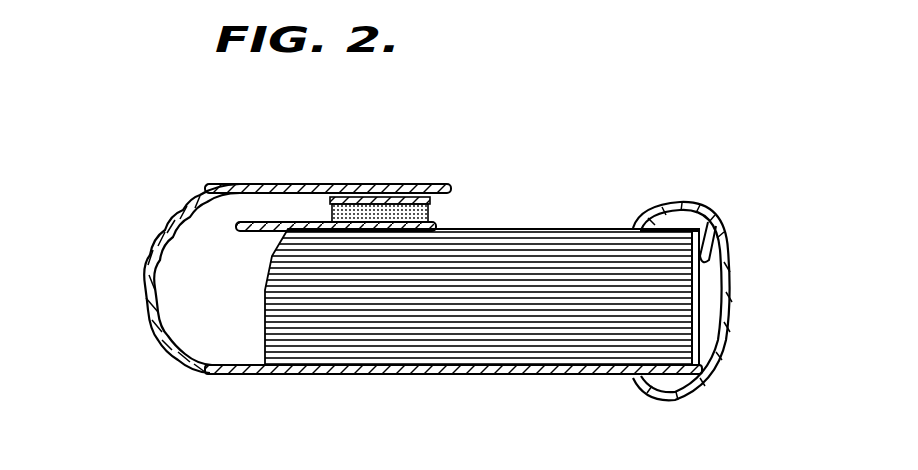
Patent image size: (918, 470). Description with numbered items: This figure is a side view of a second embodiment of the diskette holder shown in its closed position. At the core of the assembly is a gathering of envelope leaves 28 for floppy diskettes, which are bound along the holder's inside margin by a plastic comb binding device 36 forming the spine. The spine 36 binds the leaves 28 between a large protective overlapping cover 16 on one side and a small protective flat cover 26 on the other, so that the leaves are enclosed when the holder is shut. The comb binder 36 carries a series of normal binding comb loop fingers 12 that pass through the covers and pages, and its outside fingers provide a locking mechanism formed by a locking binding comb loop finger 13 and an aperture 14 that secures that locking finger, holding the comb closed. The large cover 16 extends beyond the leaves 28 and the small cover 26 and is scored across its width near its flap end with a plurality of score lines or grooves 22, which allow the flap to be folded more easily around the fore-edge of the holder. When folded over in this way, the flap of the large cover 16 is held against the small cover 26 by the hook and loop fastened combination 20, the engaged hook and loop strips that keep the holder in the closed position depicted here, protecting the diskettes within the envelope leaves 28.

The normal binding comb loop finger 12 is at (670, 190).
The locking binding comb loop finger 13 is at (722, 250).
The aperture for securing locking loop finger 14 is at (724, 202).
The large protective overlapping cover 16 is at (292, 184).
The hook and loop fastened combination 20 is at (432, 212).
The score lines or grooves 22 is at (148, 275).
The small protective flat cover 26 is at (548, 226).
The gathering of leaf envelope pages 28 is at (262, 296).
The plastic comb binding device 36 is at (730, 326).